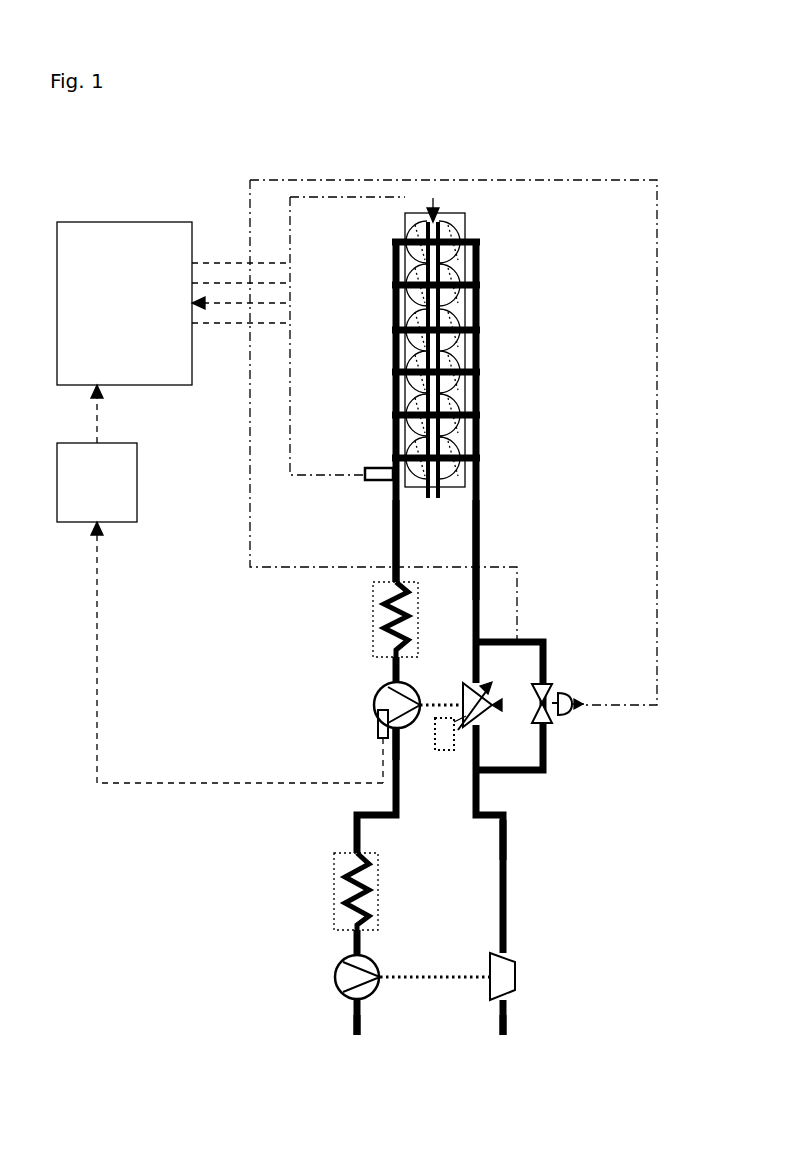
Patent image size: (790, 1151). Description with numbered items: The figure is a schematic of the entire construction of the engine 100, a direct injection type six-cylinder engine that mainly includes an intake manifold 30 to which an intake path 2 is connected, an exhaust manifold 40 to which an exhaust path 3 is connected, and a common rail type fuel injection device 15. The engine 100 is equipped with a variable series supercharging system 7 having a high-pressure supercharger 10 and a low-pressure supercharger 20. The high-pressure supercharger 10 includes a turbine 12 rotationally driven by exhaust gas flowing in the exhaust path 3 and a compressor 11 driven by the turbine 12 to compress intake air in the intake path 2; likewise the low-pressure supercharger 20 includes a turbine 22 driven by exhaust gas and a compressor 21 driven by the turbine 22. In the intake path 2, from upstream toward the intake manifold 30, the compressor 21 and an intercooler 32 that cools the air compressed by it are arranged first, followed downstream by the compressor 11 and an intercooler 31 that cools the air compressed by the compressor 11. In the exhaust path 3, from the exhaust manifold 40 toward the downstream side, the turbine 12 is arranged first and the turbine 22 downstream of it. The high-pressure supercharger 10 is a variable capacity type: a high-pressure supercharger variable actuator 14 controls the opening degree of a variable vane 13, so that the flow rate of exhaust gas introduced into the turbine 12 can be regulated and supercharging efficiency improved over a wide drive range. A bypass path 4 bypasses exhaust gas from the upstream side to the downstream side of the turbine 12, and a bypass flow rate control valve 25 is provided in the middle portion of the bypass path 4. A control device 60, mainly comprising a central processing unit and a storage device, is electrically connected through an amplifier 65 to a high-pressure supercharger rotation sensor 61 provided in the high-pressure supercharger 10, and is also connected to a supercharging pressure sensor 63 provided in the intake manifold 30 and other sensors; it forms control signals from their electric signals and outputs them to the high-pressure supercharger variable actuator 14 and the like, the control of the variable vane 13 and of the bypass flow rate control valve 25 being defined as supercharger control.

The engine 100 is at (672, 100).
The control device 60 is at (126, 318).
The amplifier 65 is at (104, 497).
The common rail type fuel injection device 15 is at (442, 265).
The intake manifold 30 is at (380, 352).
The exhaust manifold 40 is at (492, 352).
The supercharging pressure sensor 63 is at (380, 468).
The intake path 2 is at (380, 515).
The exhaust path 3 is at (492, 515).
The intercooler 31 is at (372, 618).
The compressor 11 is at (368, 706).
The high-pressure supercharger rotation sensor 61 is at (372, 732).
The variable vane 13 is at (488, 680).
The bypass path 4 is at (547, 658).
The bypass flow rate control valve 25 is at (576, 716).
The turbine 12 is at (486, 722).
The high-pressure supercharger variable actuator 14 is at (447, 752).
The high-pressure supercharger 10 is at (422, 755).
The variable series supercharging system 7 is at (584, 852).
The intercooler 32 is at (334, 893).
The compressor 21 is at (335, 977).
The turbine 22 is at (516, 980).
The low-pressure supercharger 20 is at (423, 1013).